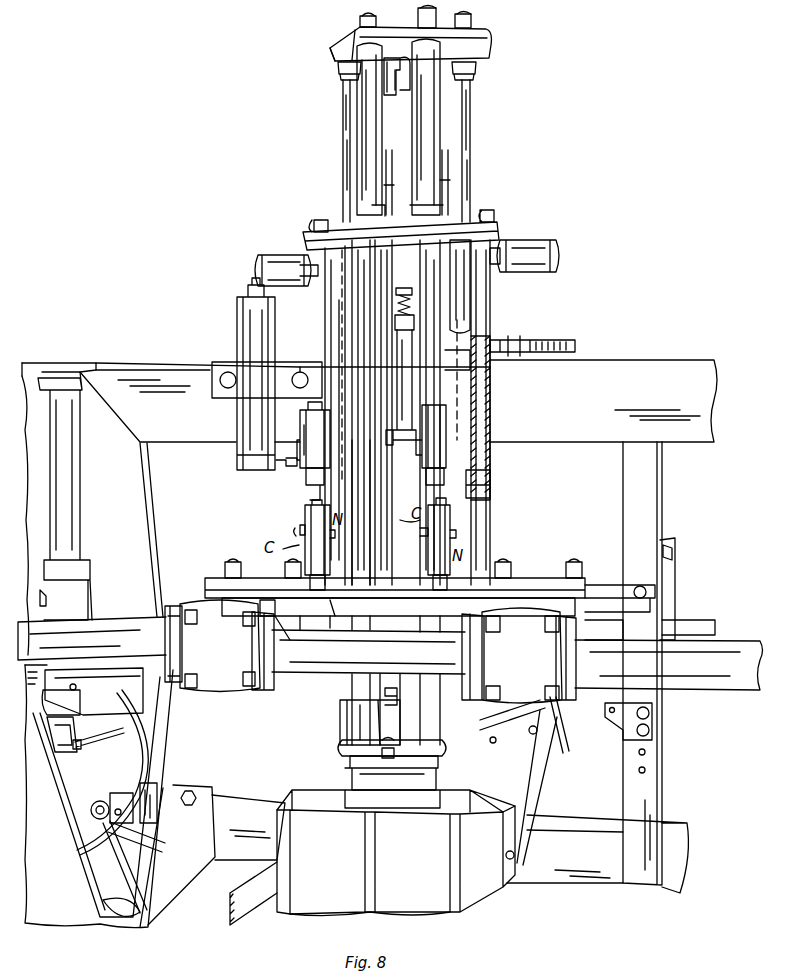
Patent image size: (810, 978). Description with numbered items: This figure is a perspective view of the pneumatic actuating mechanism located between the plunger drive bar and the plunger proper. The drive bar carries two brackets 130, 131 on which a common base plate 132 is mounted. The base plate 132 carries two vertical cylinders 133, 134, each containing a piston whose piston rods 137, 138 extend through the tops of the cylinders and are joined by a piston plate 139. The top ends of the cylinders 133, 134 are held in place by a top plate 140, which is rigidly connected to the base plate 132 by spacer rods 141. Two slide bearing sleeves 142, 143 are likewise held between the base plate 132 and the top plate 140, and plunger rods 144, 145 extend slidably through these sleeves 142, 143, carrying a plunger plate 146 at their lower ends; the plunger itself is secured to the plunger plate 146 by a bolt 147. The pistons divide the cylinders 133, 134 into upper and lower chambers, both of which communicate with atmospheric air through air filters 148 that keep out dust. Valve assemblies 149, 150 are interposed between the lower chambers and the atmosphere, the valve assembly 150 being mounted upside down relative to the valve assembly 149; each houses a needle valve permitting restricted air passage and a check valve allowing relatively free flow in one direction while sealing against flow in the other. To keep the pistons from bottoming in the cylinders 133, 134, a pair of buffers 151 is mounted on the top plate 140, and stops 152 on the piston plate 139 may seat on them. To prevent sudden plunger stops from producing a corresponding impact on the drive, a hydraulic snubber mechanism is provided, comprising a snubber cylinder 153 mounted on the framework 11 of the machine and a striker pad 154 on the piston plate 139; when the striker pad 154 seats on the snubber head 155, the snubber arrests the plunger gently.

The framework 11 is at (600, 403).
The bracket 130 is at (224, 655).
The bracket 131 is at (523, 665).
The base plate 132 is at (430, 587).
The vertical cylinder 133 is at (345, 338).
The vertical cylinder 134 is at (458, 312).
The piston rod 137 is at (341, 150).
The piston rod 138 is at (472, 117).
The piston plate 139 is at (486, 32).
The top plate 140 is at (495, 226).
The spacer rod 141 is at (324, 306).
The slide bearing sleeve 142 is at (368, 525).
The slide bearing sleeve 143 is at (415, 560).
The plunger rod 144 is at (366, 682).
The plunger rod 145 is at (420, 684).
The plunger plate 146 is at (440, 764).
The bolt 147 is at (370, 716).
The air filter 148 is at (280, 254).
The valve assembly 149 is at (304, 528).
The valve assembly 150 is at (452, 526).
The buffer 151 is at (388, 188).
The stop 152 is at (353, 76).
The snubber cylinder 153 is at (402, 442).
The striker pad 154 is at (401, 68).
The snubber head 155 is at (400, 288).